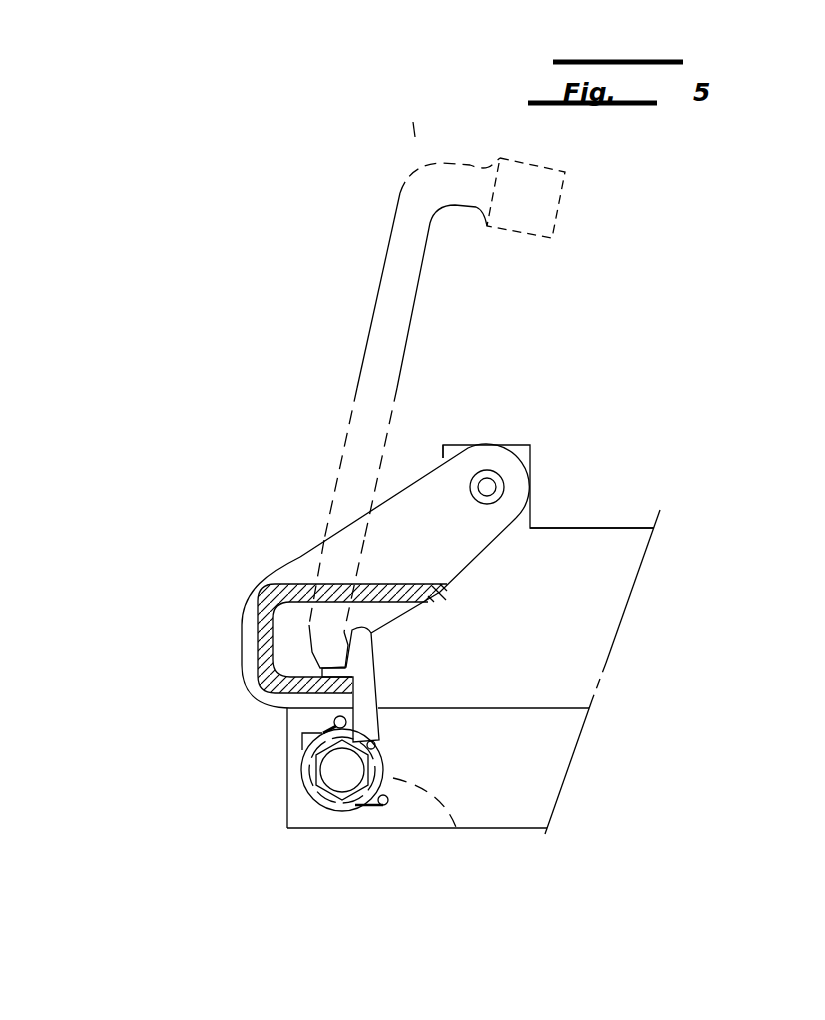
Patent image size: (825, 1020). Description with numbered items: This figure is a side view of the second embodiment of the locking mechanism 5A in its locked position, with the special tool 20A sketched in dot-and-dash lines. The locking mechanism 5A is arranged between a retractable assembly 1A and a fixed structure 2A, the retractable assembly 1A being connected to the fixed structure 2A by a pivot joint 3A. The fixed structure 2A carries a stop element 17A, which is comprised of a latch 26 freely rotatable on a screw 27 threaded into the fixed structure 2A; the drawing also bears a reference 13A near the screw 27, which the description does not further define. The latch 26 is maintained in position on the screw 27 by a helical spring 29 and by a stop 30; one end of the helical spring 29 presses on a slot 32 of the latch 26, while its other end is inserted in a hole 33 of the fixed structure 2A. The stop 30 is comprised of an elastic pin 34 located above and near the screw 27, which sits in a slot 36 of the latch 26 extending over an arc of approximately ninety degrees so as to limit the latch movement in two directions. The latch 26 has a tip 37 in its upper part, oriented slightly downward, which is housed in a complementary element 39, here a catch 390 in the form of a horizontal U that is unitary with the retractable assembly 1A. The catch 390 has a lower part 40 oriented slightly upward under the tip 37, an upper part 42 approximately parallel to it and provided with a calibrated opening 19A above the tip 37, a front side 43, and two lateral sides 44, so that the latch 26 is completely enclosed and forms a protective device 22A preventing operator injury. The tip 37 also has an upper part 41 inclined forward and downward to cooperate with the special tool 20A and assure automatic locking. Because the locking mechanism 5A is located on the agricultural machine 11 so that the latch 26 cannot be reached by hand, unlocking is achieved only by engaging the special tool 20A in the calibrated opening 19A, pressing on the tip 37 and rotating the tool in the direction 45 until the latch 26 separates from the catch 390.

The direction 45 is at (360, 150).
The special tool 20A is at (543, 220).
The locking mechanism 5A is at (645, 345).
The lateral sides 44 is at (433, 442).
The retractable assembly 1A is at (418, 497).
The pivot joint 3A is at (503, 470).
The protective device 22A is at (262, 522).
The tip 37 is at (313, 652).
The complementary element 39 is at (232, 610).
The upper part 41 is at (317, 647).
The calibrated opening 19A is at (345, 577).
The upper part 42 is at (443, 587).
The stop element 17A is at (453, 617).
The fixed structure 2A is at (640, 622).
The catch 390 is at (260, 638).
The latch 26 is at (390, 657).
The front side 43 is at (260, 660).
The elastic pin 34 is at (380, 722).
The lower part 40 is at (303, 722).
The slot 36 is at (275, 712).
The slot 32 is at (397, 748).
The stop 30 is at (305, 747).
The screw 27 is at (340, 773).
The axis 13A is at (345, 808).
The hole 33 is at (380, 807).
The helical spring 29 is at (441, 827).
The agricultural machine 11 is at (635, 770).